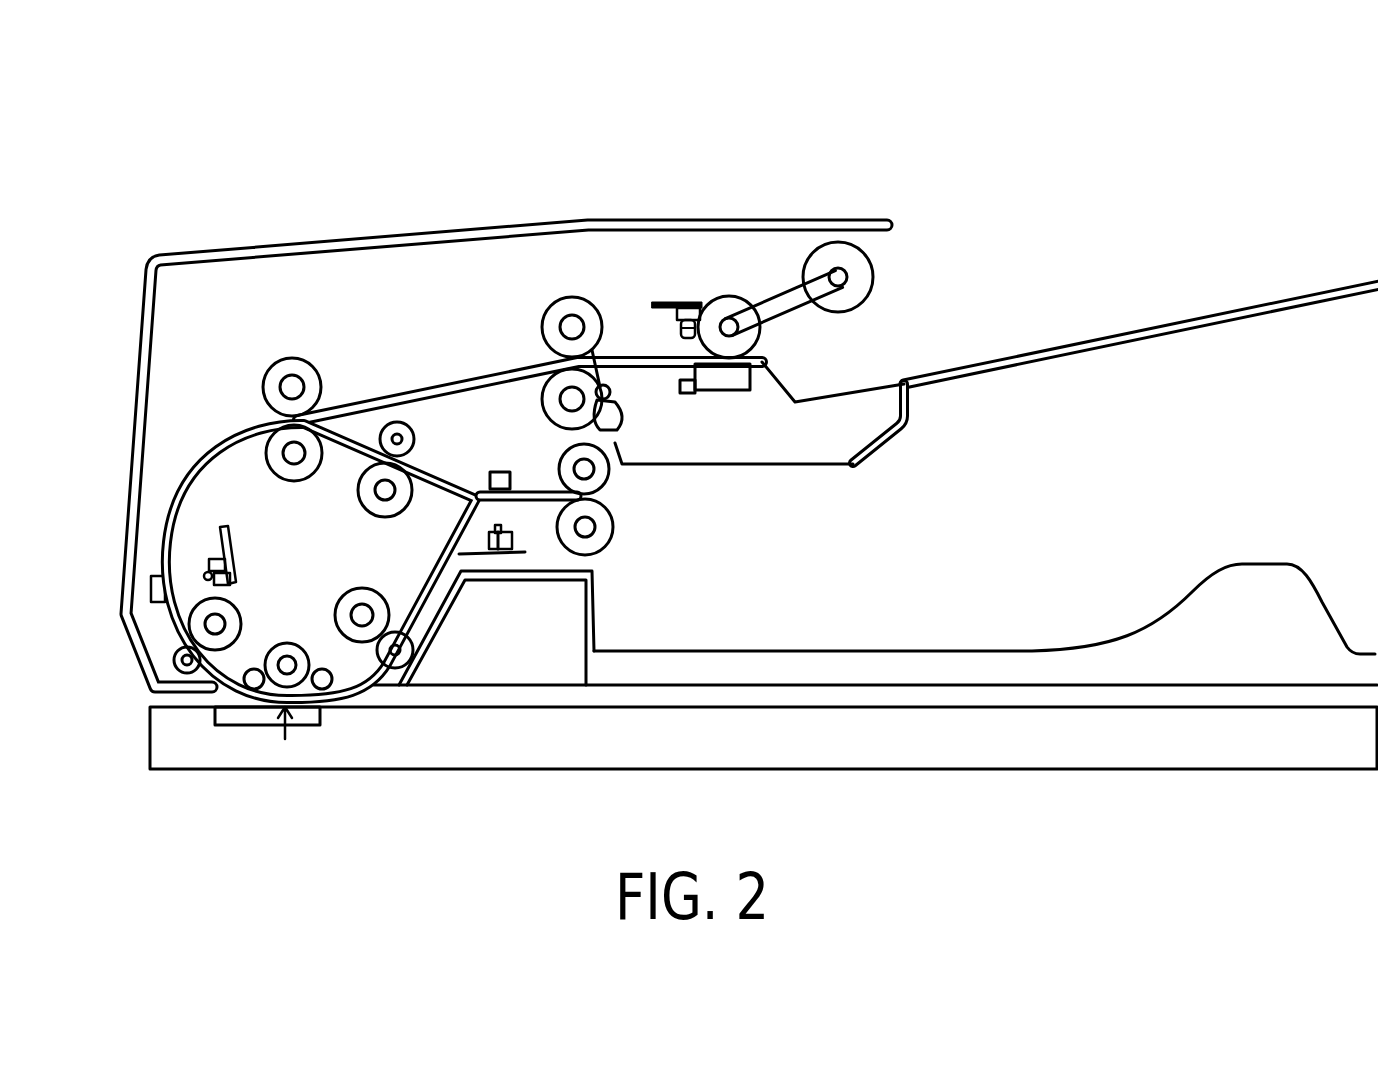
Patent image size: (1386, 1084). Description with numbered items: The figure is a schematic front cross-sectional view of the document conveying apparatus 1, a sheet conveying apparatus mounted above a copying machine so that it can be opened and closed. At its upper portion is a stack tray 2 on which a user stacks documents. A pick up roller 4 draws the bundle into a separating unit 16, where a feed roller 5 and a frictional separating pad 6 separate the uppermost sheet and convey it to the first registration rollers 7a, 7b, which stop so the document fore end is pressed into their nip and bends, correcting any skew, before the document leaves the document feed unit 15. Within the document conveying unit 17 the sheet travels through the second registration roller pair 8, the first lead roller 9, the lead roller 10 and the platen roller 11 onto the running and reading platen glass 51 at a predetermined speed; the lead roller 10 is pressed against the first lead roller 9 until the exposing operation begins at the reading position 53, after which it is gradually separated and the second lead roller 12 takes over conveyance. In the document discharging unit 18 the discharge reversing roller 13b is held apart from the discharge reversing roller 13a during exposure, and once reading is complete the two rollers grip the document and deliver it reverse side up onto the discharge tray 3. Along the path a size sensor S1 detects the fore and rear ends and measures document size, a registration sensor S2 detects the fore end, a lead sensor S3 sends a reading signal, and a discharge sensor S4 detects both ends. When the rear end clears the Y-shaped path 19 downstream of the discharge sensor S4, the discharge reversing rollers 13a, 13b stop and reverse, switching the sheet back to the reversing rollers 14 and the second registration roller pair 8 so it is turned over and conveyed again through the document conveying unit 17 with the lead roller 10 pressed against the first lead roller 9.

The document conveying apparatus 1 is at (605, 218).
The stack tray 2 is at (1050, 347).
The discharge tray 3 is at (822, 648).
The pick up roller 4 is at (836, 260).
The feed roller 5 is at (733, 296).
The frictional separating pad 6 is at (724, 386).
The first registration roller 7a is at (582, 303).
The first registration roller 7b is at (545, 402).
The second registration roller pair 8 is at (300, 372).
The first lead roller 9 is at (233, 618).
The lead roller 10 is at (172, 657).
The platen roller 11 is at (275, 646).
The second lead roller 12 is at (362, 590).
The discharge reversing roller 13a is at (603, 474).
The discharge reversing roller 13b is at (604, 540).
The reversing rollers 14 is at (402, 498).
The document feed unit 15 is at (880, 288).
The separating unit 16 is at (772, 383).
The document conveying unit 17 is at (184, 440).
The document discharging unit 18 is at (627, 513).
The Y-shaped path 19 is at (493, 500).
The size sensor S1 is at (673, 290).
The registration sensor S2 is at (612, 412).
The lead sensor S3 is at (232, 552).
The discharge sensor S4 is at (511, 544).
The running and reading platen glass 51 is at (252, 721).
The reading position 53 is at (292, 736).